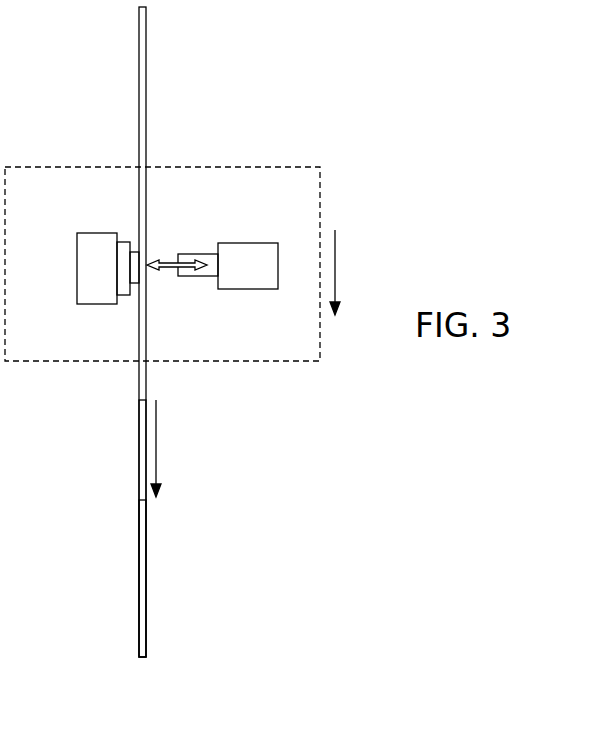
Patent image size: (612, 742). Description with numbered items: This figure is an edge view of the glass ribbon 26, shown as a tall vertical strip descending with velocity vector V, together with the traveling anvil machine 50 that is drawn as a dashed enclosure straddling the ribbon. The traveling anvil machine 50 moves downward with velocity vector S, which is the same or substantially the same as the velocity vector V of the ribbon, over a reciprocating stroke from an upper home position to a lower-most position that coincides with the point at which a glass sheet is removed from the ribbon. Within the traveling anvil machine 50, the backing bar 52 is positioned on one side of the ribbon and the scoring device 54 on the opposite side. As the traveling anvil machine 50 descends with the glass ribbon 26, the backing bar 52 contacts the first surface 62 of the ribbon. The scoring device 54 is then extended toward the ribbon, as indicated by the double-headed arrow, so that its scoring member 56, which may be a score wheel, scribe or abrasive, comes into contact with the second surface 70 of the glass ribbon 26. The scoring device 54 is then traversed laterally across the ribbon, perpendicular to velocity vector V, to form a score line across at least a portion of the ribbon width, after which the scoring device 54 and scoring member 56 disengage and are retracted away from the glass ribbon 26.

The second surface 70 is at (147, 105).
The traveling anvil machine 50 is at (297, 167).
The backing bar 52 is at (87, 233).
The scoring device 54 is at (237, 236).
The scoring member 56 is at (168, 268).
The first surface 62 is at (139, 459).
The glass ribbon 26 is at (158, 548).
The velocity vector S is at (336, 263).
The velocity vector V is at (156, 442).